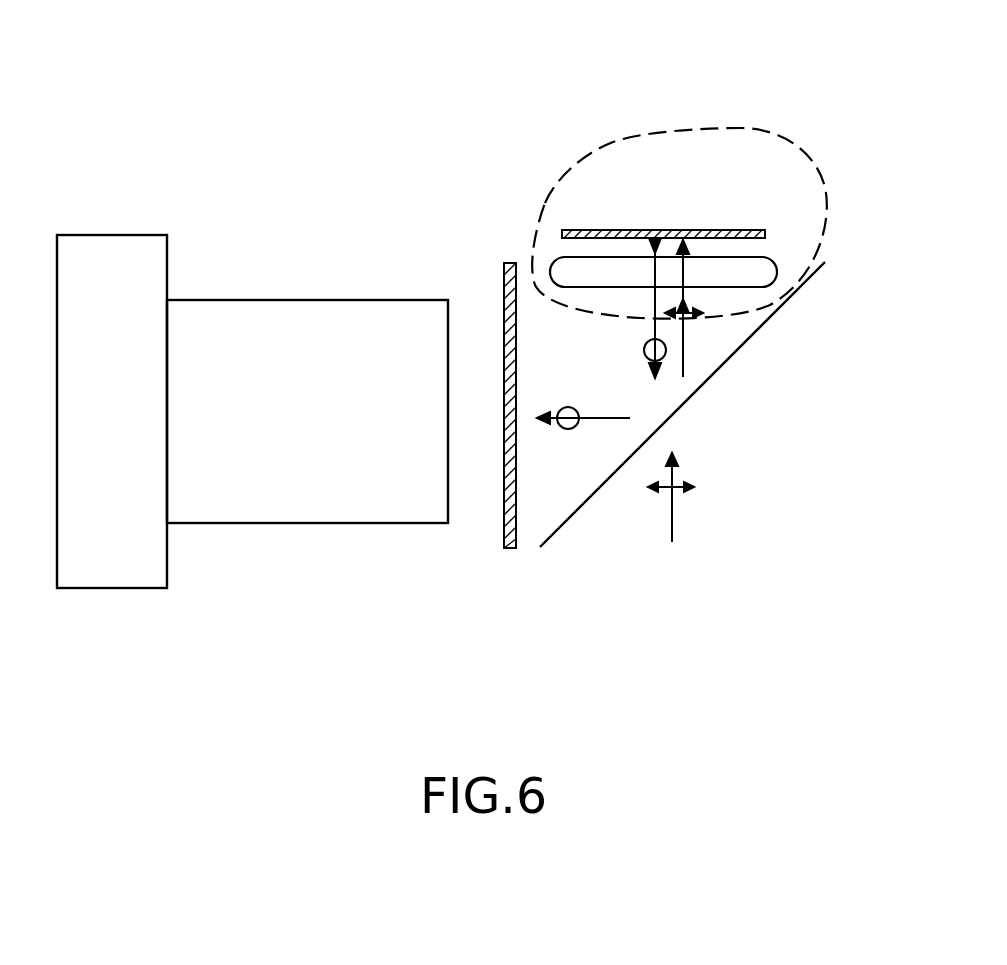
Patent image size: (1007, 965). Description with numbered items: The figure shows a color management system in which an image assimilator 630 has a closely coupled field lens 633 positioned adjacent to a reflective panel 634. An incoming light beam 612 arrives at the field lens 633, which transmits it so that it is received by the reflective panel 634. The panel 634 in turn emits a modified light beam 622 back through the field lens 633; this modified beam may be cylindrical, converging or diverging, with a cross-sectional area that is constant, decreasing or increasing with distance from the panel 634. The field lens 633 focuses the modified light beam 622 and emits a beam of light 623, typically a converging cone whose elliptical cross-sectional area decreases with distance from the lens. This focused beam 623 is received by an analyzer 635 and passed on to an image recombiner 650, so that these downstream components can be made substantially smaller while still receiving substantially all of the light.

The light beam 612 is at (685, 342).
The modified light beam 622 is at (654, 247).
The beam of light 623 is at (643, 347).
The image assimilator 630 is at (668, 133).
The field lens 633 is at (553, 268).
The reflective panel 634 is at (750, 230).
The analyzer 635 is at (612, 476).
The image recombiner 650 is at (325, 413).